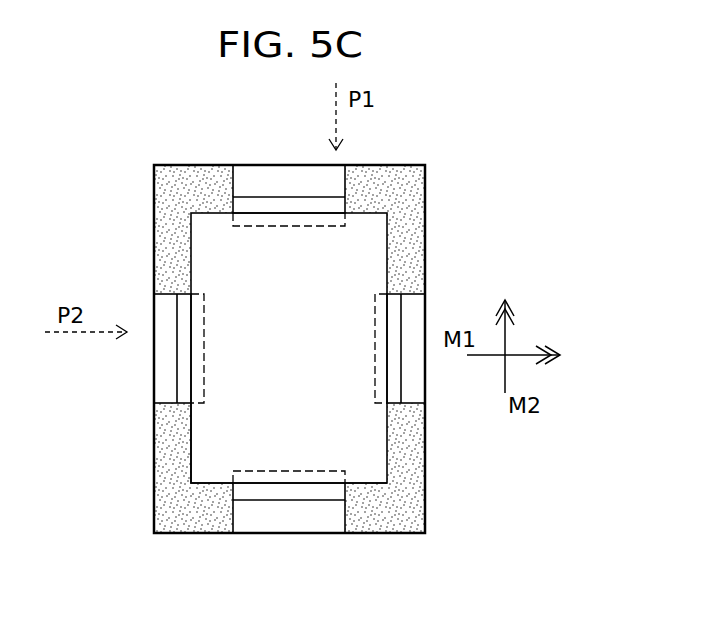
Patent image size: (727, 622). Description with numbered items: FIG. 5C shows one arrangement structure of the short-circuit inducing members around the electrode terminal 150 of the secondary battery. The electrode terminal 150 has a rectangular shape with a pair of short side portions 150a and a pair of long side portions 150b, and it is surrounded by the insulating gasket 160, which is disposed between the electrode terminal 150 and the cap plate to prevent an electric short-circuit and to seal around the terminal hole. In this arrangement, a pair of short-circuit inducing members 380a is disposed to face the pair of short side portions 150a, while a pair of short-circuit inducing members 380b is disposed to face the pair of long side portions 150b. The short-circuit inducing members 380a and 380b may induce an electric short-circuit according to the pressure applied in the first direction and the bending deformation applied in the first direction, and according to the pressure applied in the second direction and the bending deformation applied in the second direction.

The insulating gasket 160 is at (410, 233).
The electrode terminal 150 is at (312, 363).
The short-circuit inducing member 380a is at (288, 173).
The short-circuit inducing member 380b is at (162, 377).
The short side portion 150a is at (356, 463).
The long side portion 150b is at (193, 443).